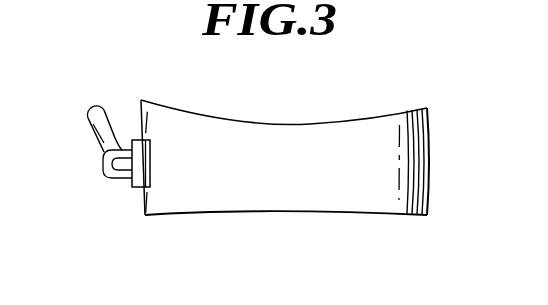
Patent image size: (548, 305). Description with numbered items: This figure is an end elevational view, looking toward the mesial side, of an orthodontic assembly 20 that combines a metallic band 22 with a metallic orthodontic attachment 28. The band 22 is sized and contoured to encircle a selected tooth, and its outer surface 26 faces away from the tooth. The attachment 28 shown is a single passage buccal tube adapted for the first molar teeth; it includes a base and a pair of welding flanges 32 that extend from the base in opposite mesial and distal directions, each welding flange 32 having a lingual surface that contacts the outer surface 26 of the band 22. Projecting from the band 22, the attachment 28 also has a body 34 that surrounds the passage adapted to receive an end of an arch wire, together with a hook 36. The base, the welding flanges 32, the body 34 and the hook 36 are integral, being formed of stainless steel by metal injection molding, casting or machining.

The orthodontic assembly 20 is at (368, 100).
The metallic band 22 is at (402, 214).
The outer surface 26 is at (378, 197).
The orthodontic attachment 28 is at (97, 158).
The welding flange 32 is at (137, 189).
The body 34 is at (103, 160).
The hook 36 is at (95, 107).